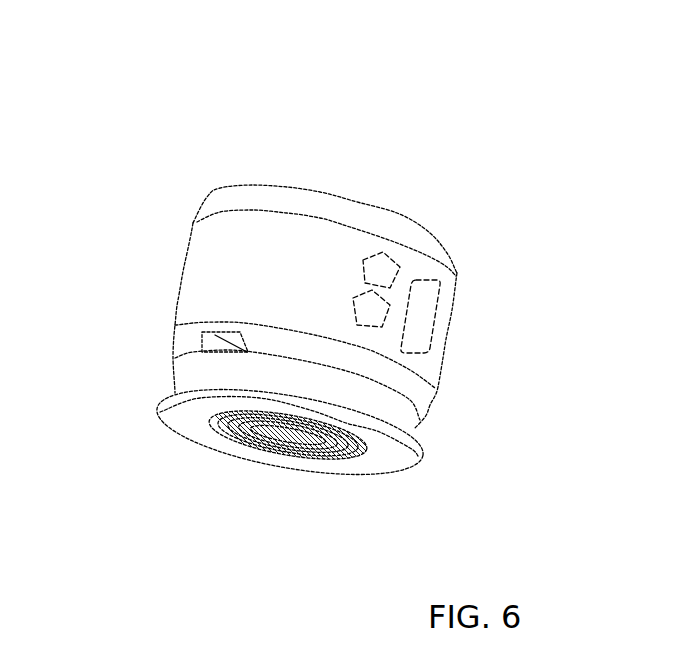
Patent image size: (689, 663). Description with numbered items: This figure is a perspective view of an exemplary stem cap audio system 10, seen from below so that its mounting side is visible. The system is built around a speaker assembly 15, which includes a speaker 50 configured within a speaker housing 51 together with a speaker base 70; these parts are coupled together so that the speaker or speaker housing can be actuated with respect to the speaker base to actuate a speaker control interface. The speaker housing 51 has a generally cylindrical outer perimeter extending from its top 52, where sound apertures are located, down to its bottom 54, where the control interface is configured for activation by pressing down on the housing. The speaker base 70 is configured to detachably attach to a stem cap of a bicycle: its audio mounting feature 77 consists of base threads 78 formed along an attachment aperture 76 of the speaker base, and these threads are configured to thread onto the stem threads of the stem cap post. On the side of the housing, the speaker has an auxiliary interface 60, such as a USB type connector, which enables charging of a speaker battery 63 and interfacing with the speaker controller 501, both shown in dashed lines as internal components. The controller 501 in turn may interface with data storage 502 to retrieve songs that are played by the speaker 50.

The stem cap audio system 10 is at (118, 146).
The speaker assembly 15 is at (378, 223).
The speaker 50 is at (343, 237).
The speaker housing 51 is at (212, 270).
The top 52 is at (295, 185).
The bottom 54 is at (397, 447).
The auxiliary interface 60 is at (213, 347).
The speaker battery 63 is at (437, 310).
The speaker base 70 is at (188, 383).
The attachment aperture 76 is at (272, 432).
The audio mounting feature 77 is at (320, 445).
The base threads 78 is at (225, 430).
The speaker controller 501 is at (388, 273).
The data storage 502 is at (379, 323).